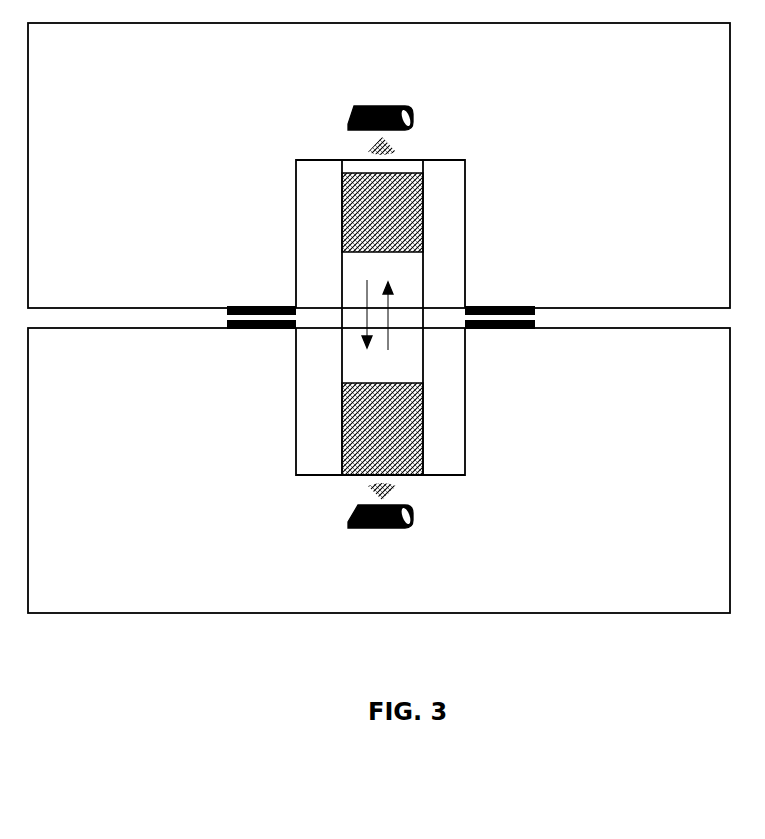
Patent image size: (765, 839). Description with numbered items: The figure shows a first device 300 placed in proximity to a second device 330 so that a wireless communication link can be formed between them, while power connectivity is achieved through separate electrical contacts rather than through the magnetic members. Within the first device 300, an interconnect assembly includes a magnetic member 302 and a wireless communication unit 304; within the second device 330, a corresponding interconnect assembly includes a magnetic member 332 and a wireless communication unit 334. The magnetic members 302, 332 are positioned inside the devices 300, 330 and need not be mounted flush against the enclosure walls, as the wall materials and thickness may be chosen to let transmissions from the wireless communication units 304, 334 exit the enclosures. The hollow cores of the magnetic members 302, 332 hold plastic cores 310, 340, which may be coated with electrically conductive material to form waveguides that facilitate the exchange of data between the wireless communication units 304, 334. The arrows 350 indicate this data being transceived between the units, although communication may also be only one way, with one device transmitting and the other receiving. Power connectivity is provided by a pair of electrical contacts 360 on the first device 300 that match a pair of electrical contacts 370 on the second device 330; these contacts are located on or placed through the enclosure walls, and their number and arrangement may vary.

The first device 300 is at (379, 165).
The second device 330 is at (379, 470).
The magnetic member 302 is at (295, 238).
The magnetic member 332 is at (295, 430).
The wireless communication unit 304 is at (386, 106).
The wireless communication unit 334 is at (348, 527).
The plastic core 310 is at (423, 236).
The plastic core 340 is at (424, 409).
The arrows 350 is at (396, 293).
The electrical contacts 360 is at (246, 307).
The electrical contacts 370 is at (246, 329).